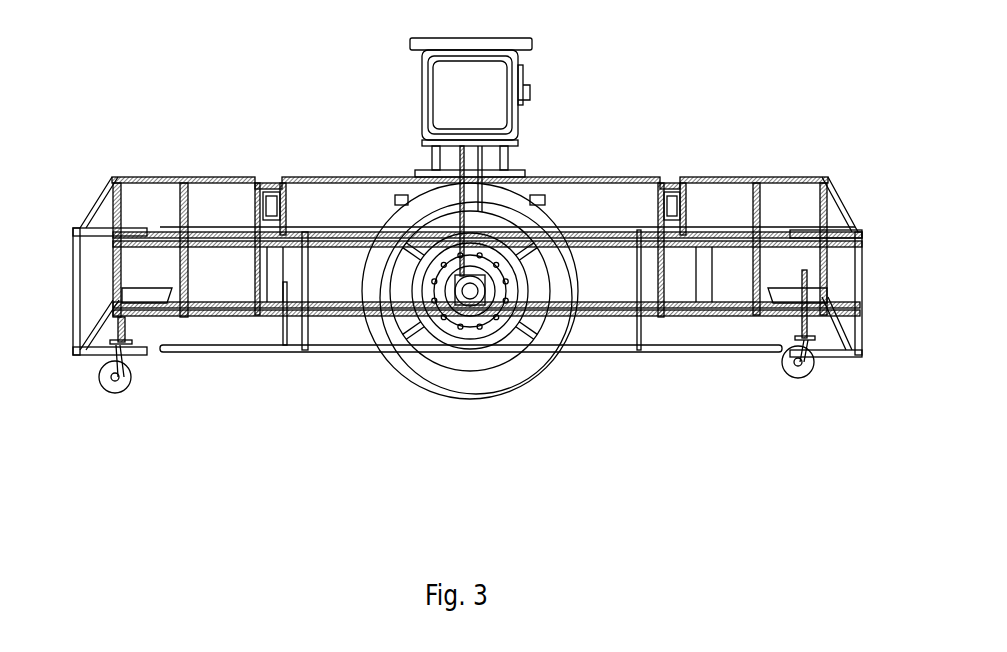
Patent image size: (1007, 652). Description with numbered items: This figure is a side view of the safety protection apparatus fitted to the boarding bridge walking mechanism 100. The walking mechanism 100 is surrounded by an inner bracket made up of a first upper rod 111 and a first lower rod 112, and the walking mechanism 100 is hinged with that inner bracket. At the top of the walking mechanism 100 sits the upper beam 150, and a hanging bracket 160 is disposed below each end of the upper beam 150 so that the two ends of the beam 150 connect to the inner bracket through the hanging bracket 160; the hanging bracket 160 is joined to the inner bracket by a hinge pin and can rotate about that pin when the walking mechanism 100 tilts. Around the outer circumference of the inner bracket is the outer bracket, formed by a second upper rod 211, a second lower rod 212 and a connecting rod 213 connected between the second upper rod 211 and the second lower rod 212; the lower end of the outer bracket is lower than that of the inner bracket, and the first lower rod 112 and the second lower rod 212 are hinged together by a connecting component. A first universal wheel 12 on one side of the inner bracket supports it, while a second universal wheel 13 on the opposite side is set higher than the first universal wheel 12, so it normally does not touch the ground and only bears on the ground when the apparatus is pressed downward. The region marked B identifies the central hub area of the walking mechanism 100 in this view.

The boarding bridge walking mechanism 100 is at (602, 127).
The first upper rod 111 is at (306, 176).
The first lower rod 112 is at (343, 354).
The first universal wheel 12 is at (113, 393).
The second universal wheel 13 is at (810, 378).
The upper beam 150 is at (502, 78).
The hanging bracket 160 is at (418, 380).
The second upper rod 211 is at (607, 225).
The second lower rod 212 is at (695, 353).
The connecting rod 213 is at (633, 330).
The region B is at (500, 318).